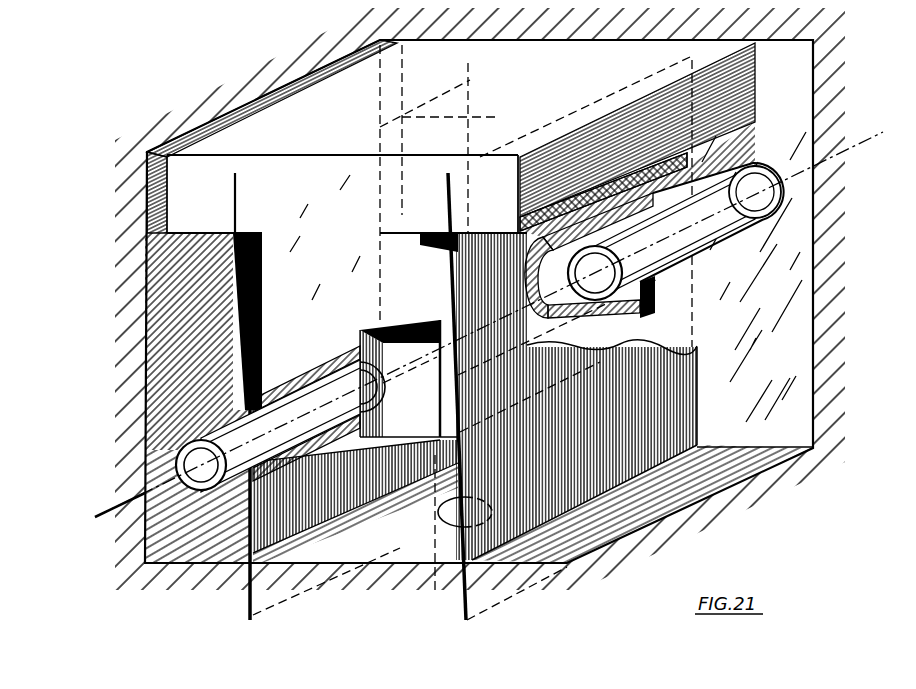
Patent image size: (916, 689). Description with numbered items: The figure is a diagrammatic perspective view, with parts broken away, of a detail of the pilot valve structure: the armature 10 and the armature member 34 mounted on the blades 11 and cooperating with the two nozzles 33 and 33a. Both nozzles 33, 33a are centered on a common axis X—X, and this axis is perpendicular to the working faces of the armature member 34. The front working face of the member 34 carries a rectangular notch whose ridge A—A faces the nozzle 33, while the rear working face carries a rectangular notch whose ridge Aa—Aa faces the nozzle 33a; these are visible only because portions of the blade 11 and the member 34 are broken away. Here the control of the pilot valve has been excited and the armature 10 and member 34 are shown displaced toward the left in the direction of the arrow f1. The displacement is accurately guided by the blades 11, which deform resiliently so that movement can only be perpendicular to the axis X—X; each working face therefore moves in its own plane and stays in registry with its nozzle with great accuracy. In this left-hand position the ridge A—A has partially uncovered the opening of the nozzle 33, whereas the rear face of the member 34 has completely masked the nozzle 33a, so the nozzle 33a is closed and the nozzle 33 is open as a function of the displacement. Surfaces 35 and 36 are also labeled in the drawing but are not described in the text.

The armature 10 is at (333, 180).
The blades 11 is at (525, 478).
The nozzle 33 is at (350, 382).
The nozzle 33a is at (600, 268).
The armature member 34 is at (325, 268).
The lower face 35 is at (197, 524).
The slot 36 is at (400, 572).
The ridge A— A is at (360, 342).
The ridge Aa— Aa is at (545, 237).
The axis X— X is at (485, 317).
The arrow f1 is at (410, 205).